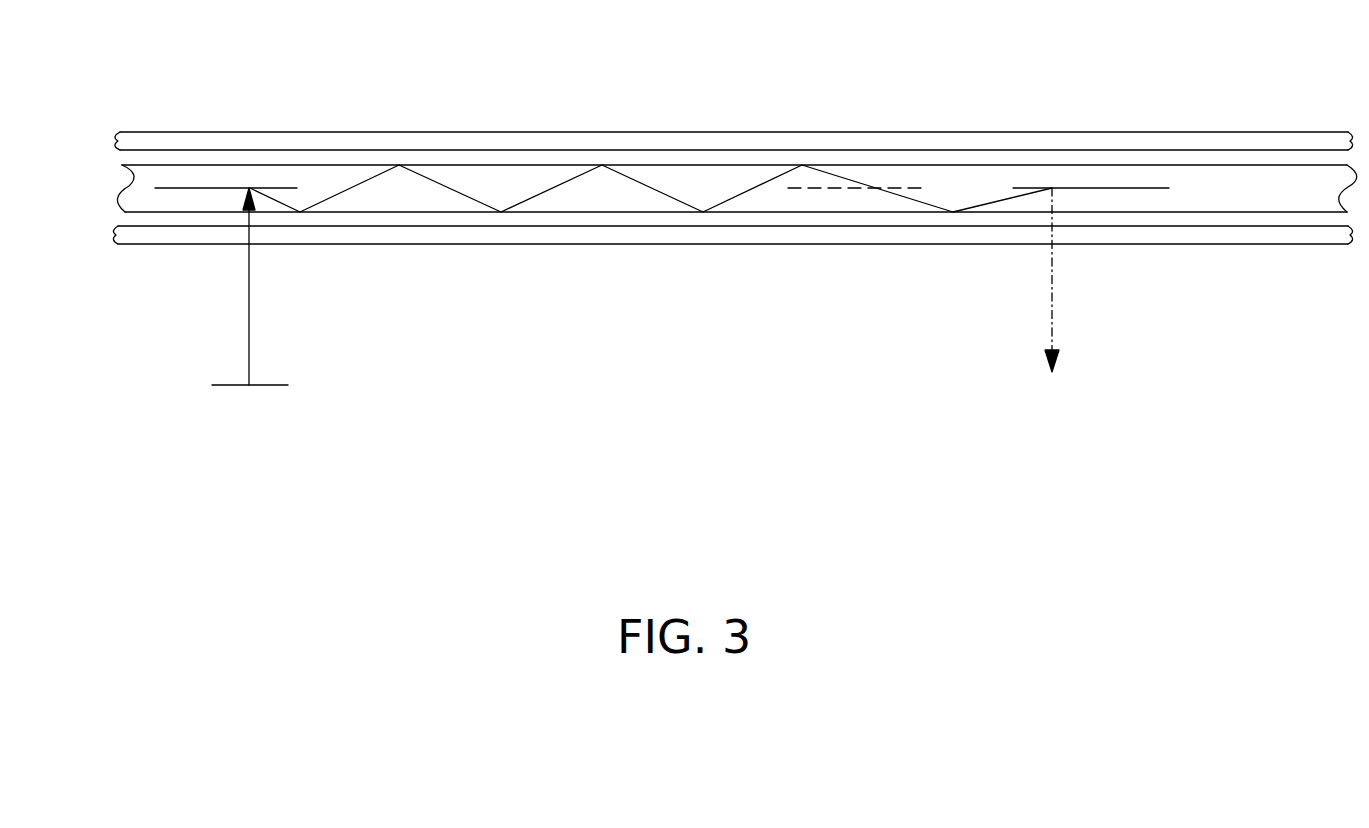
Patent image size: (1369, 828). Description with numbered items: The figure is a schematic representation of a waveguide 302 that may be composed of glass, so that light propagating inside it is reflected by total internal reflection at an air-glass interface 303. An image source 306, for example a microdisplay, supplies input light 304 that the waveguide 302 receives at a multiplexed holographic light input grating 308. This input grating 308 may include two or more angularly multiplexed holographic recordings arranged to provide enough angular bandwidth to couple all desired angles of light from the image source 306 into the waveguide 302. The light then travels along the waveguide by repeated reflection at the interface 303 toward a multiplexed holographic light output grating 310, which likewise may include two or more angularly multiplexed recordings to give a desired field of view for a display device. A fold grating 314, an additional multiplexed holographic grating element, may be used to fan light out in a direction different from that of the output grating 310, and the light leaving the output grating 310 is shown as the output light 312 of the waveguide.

The waveguide 302 is at (122, 165).
The air-glass interface 303 is at (532, 165).
The input light 304 is at (249, 300).
The image source 306 is at (213, 385).
The multiplexed holographic light input grating 308 is at (274, 170).
The multiplexed holographic light output grating 310 is at (1114, 170).
The output light 312 is at (1052, 255).
The fold grating 314 is at (889, 170).